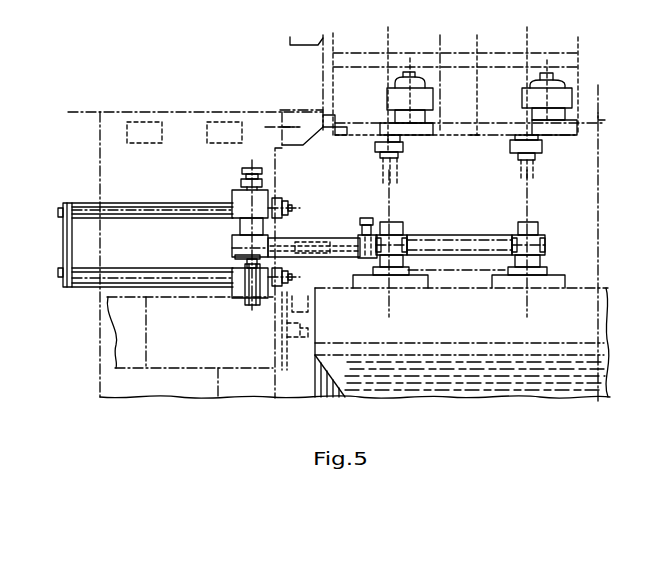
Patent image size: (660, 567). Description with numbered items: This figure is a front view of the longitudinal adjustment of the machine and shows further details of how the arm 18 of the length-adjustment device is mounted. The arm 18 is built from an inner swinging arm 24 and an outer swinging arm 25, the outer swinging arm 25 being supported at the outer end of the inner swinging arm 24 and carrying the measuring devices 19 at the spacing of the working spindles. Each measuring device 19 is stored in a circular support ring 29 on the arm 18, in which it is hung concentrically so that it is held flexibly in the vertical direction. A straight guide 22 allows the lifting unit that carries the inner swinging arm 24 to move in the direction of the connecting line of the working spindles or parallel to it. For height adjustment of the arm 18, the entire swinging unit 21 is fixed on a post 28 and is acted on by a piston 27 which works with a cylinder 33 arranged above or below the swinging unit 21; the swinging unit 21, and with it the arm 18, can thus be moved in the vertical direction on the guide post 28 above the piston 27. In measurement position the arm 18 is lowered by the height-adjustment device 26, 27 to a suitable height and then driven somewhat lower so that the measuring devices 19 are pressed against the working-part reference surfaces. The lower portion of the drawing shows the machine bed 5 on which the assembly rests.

The machine bed 5 is at (368, 282).
The arm 18 is at (545, 222).
The measuring device 19 is at (409, 267).
The swinging unit 21 is at (243, 243).
The straight guide 22 is at (120, 208).
The inner swinging arm 24 is at (332, 242).
The outer swinging arm 25 is at (470, 248).
The height-adjustment device 26 is at (238, 293).
The piston 27 is at (255, 300).
The post 28 is at (240, 227).
The support ring 29 is at (402, 237).
The cylinder 33 is at (185, 276).